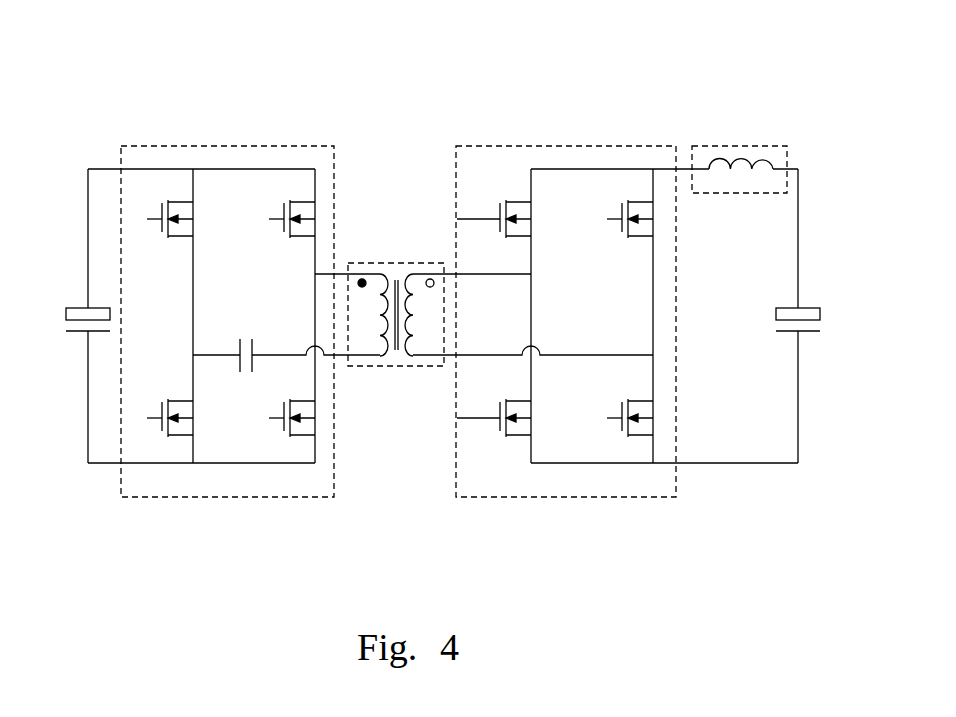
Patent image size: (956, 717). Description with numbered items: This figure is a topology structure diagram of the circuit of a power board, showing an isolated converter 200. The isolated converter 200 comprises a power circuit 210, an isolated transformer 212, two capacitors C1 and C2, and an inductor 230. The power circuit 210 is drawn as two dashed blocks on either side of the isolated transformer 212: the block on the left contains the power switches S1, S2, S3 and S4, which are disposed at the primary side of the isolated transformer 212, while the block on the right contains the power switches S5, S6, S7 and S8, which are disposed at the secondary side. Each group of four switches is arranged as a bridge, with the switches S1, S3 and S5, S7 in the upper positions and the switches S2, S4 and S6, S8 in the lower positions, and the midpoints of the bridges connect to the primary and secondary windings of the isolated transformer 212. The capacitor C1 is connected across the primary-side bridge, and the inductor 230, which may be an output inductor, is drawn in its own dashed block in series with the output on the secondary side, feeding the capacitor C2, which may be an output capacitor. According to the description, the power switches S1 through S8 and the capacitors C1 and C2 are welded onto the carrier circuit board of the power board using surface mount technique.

The isolated converter 200 is at (114, 29).
The power circuit 210 is at (225, 146).
The isolated transformer 212 is at (395, 262).
The inductor 230 is at (738, 146).
The power switch S1 is at (160, 229).
The power switch S2 is at (160, 428).
The power switch S3 is at (282, 229).
The power switch S4 is at (282, 428).
The power switch S5 is at (494, 229).
The power switch S6 is at (494, 428).
The power switch S7 is at (620, 229).
The power switch S8 is at (620, 428).
The capacitor C1 is at (69, 320).
The capacitor C2 is at (780, 320).